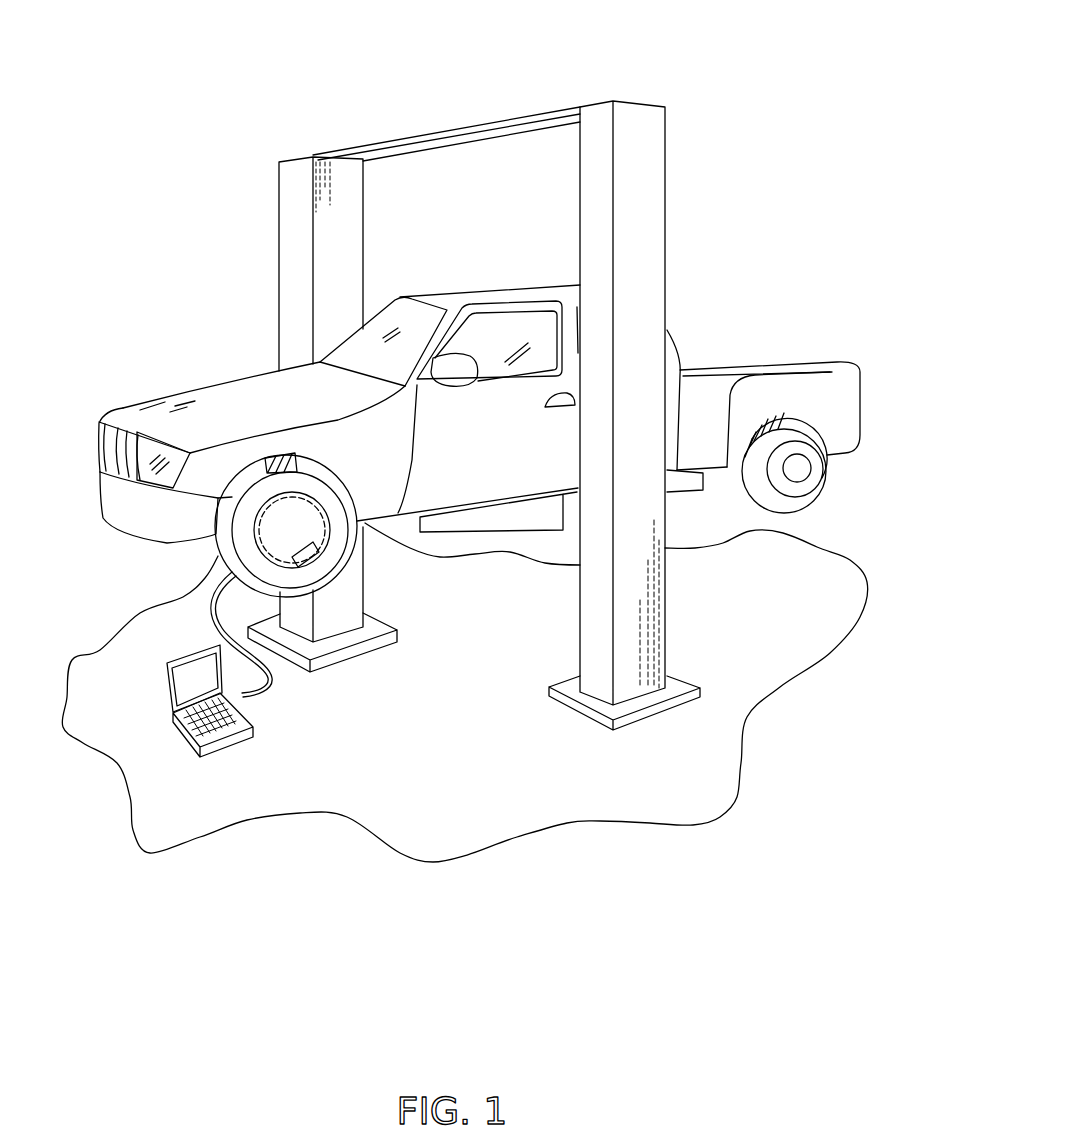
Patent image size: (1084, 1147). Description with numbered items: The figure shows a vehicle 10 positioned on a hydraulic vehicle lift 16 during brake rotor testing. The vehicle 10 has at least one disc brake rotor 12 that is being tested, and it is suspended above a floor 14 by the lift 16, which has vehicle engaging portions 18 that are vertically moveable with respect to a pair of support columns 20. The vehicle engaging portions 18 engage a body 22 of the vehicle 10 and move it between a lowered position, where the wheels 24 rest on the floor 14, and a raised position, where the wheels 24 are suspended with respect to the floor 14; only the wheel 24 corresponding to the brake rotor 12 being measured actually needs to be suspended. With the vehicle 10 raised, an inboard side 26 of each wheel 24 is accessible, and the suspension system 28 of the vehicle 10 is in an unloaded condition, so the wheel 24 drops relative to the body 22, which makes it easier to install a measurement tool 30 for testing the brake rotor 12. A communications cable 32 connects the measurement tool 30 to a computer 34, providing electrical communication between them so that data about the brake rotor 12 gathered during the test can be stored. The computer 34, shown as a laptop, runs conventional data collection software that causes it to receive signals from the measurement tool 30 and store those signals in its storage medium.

The vehicle 10 is at (150, 300).
The disc brake rotor 12 is at (292, 565).
The floor 14 is at (777, 646).
The hydraulic vehicle lift 16 is at (515, 371).
The vehicle engaging portions 18 is at (487, 537).
The support columns 20 is at (363, 222).
The body 22 is at (488, 496).
The wheels 24 is at (320, 568).
The inboard side 26 is at (196, 551).
The suspension system 28 is at (310, 453).
The measurement tool 30 is at (313, 553).
The communications cable 32 is at (270, 688).
The computer 34 is at (227, 747).